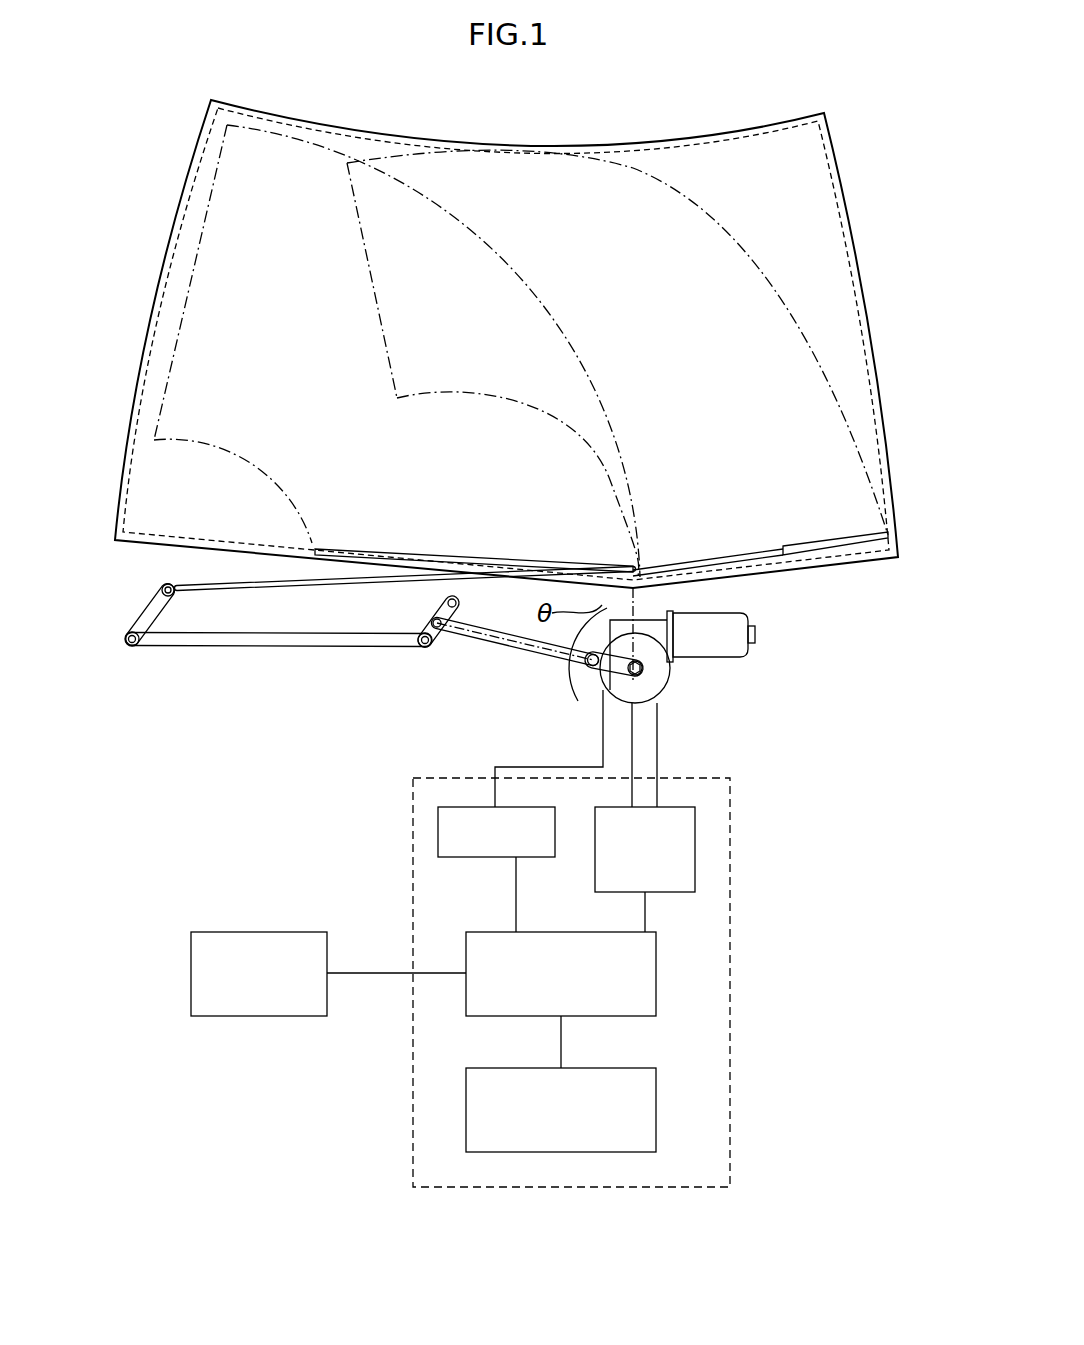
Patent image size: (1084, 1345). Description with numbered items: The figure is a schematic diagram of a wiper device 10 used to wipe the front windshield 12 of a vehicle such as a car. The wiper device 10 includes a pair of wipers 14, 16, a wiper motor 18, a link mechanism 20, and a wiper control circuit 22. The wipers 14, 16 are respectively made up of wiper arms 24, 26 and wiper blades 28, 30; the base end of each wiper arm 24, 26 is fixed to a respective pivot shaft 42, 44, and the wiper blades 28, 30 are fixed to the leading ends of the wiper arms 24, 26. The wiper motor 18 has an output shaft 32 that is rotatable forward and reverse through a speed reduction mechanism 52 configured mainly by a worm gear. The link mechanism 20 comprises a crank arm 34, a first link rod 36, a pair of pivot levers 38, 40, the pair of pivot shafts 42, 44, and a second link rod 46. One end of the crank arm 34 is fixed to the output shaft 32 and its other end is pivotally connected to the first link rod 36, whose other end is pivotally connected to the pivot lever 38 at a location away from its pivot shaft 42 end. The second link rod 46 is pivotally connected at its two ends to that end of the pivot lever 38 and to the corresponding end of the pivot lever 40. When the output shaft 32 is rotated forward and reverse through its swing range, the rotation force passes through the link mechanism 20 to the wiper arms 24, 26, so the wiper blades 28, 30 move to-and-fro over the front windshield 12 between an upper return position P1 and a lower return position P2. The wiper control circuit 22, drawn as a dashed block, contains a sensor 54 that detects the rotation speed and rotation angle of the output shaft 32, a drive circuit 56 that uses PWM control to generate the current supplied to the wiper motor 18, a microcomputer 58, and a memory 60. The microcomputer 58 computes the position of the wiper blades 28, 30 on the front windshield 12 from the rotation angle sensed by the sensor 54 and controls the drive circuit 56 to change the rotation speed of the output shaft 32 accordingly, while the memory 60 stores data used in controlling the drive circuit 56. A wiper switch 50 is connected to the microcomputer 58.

The wiper device 10 is at (688, 116).
The front windshield 12 is at (540, 146).
The wiper 14 is at (833, 541).
The wiper 16 is at (405, 520).
The wiper motor 18 is at (756, 634).
The link mechanism 20 is at (363, 657).
The wiper control circuit 22 is at (644, 982).
The wiper arm 24 is at (760, 505).
The wiper arm 26 is at (215, 582).
The wiper blade 28 is at (788, 547).
The wiper blade 30 is at (514, 551).
The output shaft 32 is at (669, 686).
The crank arm 34 is at (590, 675).
The first link rod 36 is at (500, 650).
The pivot lever 38 is at (432, 624).
The pivot lever 40 is at (138, 610).
The pivot shaft 42 is at (447, 602).
The pivot shaft 44 is at (162, 587).
The second link rod 46 is at (290, 647).
The wiper switch 50 is at (190, 977).
The speed reduction mechanism 52 is at (670, 668).
The sensor 54 is at (450, 858).
The drive circuit 56 is at (687, 893).
The microcomputer 58 is at (657, 990).
The memory 60 is at (657, 1130).
The upper return position P1 is at (186, 297).
The lower return position P2 is at (334, 552).